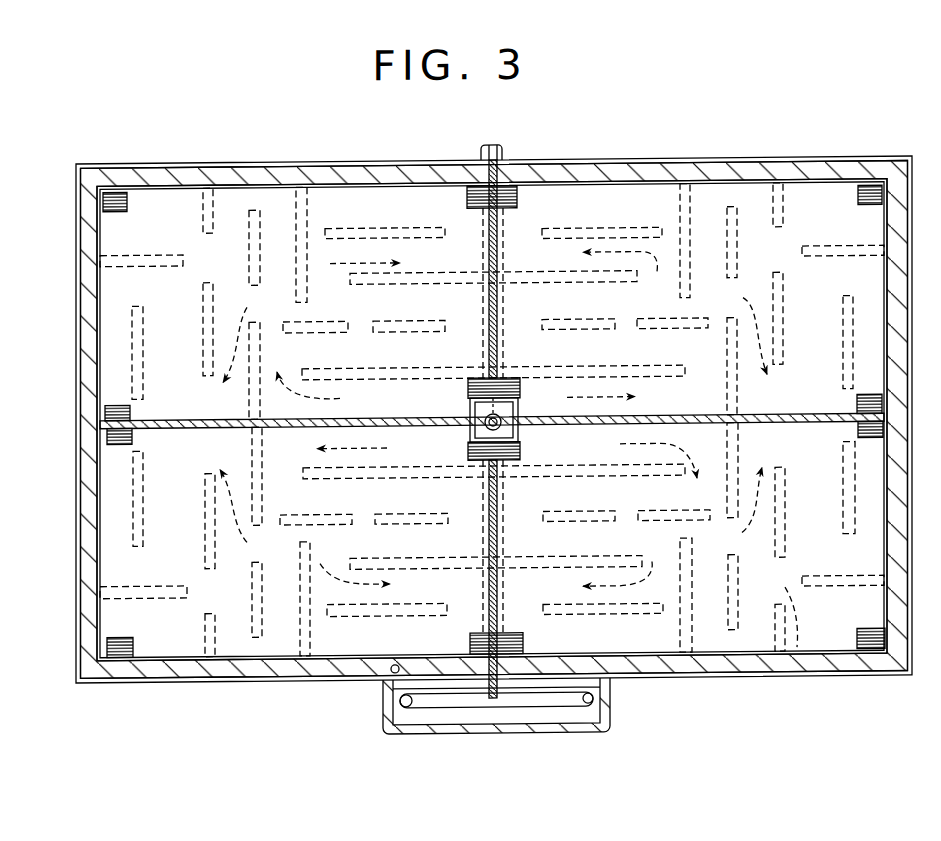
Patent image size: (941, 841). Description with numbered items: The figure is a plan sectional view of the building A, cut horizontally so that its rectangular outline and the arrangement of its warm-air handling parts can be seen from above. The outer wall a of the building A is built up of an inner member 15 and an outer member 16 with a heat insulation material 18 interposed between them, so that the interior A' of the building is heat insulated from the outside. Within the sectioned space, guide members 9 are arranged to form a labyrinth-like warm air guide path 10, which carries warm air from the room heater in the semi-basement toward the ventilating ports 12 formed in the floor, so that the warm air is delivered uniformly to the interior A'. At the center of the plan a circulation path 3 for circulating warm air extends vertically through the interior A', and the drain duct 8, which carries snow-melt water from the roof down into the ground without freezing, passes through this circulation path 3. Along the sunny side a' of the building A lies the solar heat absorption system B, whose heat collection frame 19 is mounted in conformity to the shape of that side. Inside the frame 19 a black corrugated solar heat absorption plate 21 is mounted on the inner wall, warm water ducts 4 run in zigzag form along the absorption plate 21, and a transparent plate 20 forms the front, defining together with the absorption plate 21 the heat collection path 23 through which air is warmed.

The circulation path 3 is at (472, 416).
The warm water ducts 4 is at (513, 702).
The drain duct 8 is at (503, 428).
The guide members 9 is at (416, 230).
The warm air guide path 10 is at (275, 203).
The ventilating ports 12 is at (512, 378).
The inner member 15 is at (623, 190).
The outer member 16 is at (573, 180).
The heat insulation material 18 is at (448, 175).
The heat collection frame 19 is at (610, 712).
The transparent plate 20 is at (478, 712).
The solar heat absorption plate 21 is at (546, 702).
The heat collection path 23 is at (431, 714).
The outer wall a is at (491, 183).
The building A is at (786, 167).
The interior of the building A' is at (347, 424).
The sunny side a' is at (762, 700).
The solar heat absorption system B is at (588, 735).